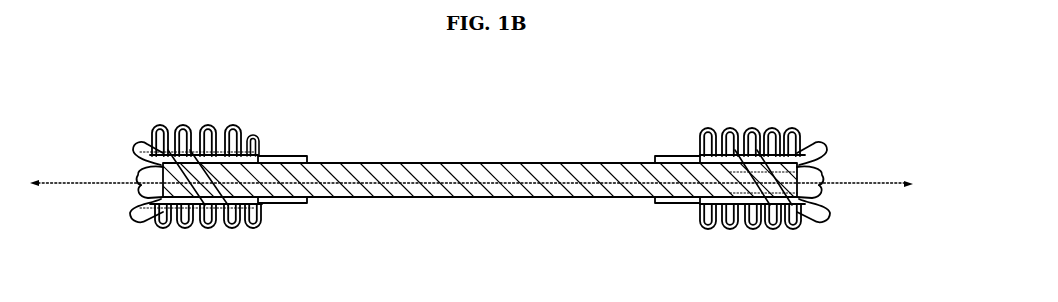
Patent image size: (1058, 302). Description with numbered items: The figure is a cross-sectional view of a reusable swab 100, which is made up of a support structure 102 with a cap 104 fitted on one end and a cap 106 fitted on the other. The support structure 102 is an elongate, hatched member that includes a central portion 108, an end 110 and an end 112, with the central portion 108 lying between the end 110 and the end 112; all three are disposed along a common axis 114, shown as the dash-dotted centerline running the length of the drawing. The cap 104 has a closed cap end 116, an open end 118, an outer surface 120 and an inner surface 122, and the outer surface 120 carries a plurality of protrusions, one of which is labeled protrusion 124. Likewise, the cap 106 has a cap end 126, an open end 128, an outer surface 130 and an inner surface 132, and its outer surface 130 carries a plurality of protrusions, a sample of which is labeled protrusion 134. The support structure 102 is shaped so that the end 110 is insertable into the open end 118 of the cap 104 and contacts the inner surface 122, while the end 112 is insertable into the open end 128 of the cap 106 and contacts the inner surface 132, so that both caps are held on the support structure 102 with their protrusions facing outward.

The reusable swab 100 is at (586, 121).
The support structure 102 is at (383, 163).
The cap 104 is at (258, 138).
The cap 106 is at (745, 130).
The central portion 108 is at (452, 198).
The end 110 is at (137, 203).
The end 112 is at (825, 185).
The axis 114 is at (901, 188).
The cap end 116 is at (137, 168).
The open end 118 is at (313, 197).
The outer surface 120 is at (163, 147).
The inner surface 122 is at (197, 140).
The protrusion 124 is at (163, 228).
The cap end 126 is at (823, 170).
The open end 128 is at (652, 197).
The outer surface 130 is at (773, 158).
The inner surface 132 is at (760, 210).
The protrusion 134 is at (722, 225).